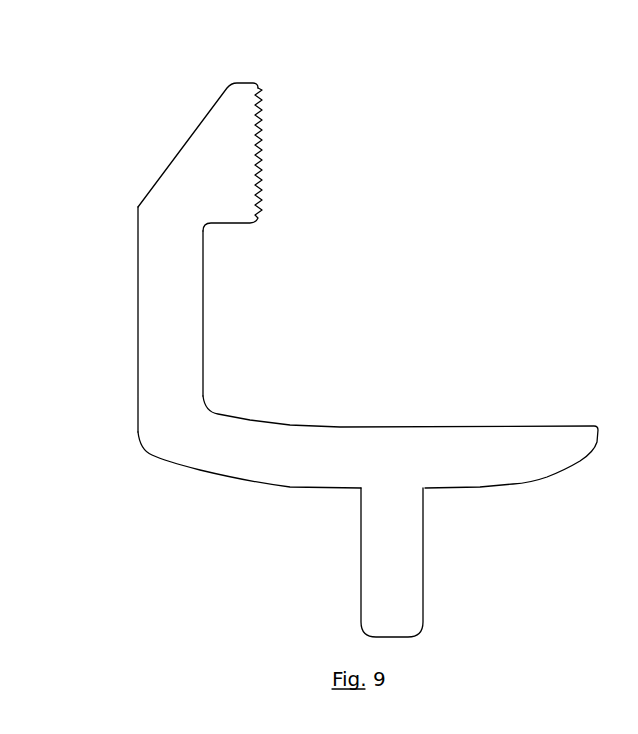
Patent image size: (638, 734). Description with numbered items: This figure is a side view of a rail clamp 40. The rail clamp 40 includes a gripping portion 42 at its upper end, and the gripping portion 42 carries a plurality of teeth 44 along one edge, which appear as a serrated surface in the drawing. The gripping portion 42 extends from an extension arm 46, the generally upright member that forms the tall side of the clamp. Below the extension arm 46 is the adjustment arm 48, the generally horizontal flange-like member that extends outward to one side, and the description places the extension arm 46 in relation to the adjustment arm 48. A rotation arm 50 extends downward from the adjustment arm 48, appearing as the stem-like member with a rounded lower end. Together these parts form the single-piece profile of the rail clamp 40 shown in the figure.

The rail clamp 40 is at (443, 168).
The gripping portion 42 is at (282, 97).
The teeth 44 is at (258, 170).
The extension arm 46 is at (138, 324).
The adjustment arm 48 is at (221, 477).
The rotation arm 50 is at (423, 592).